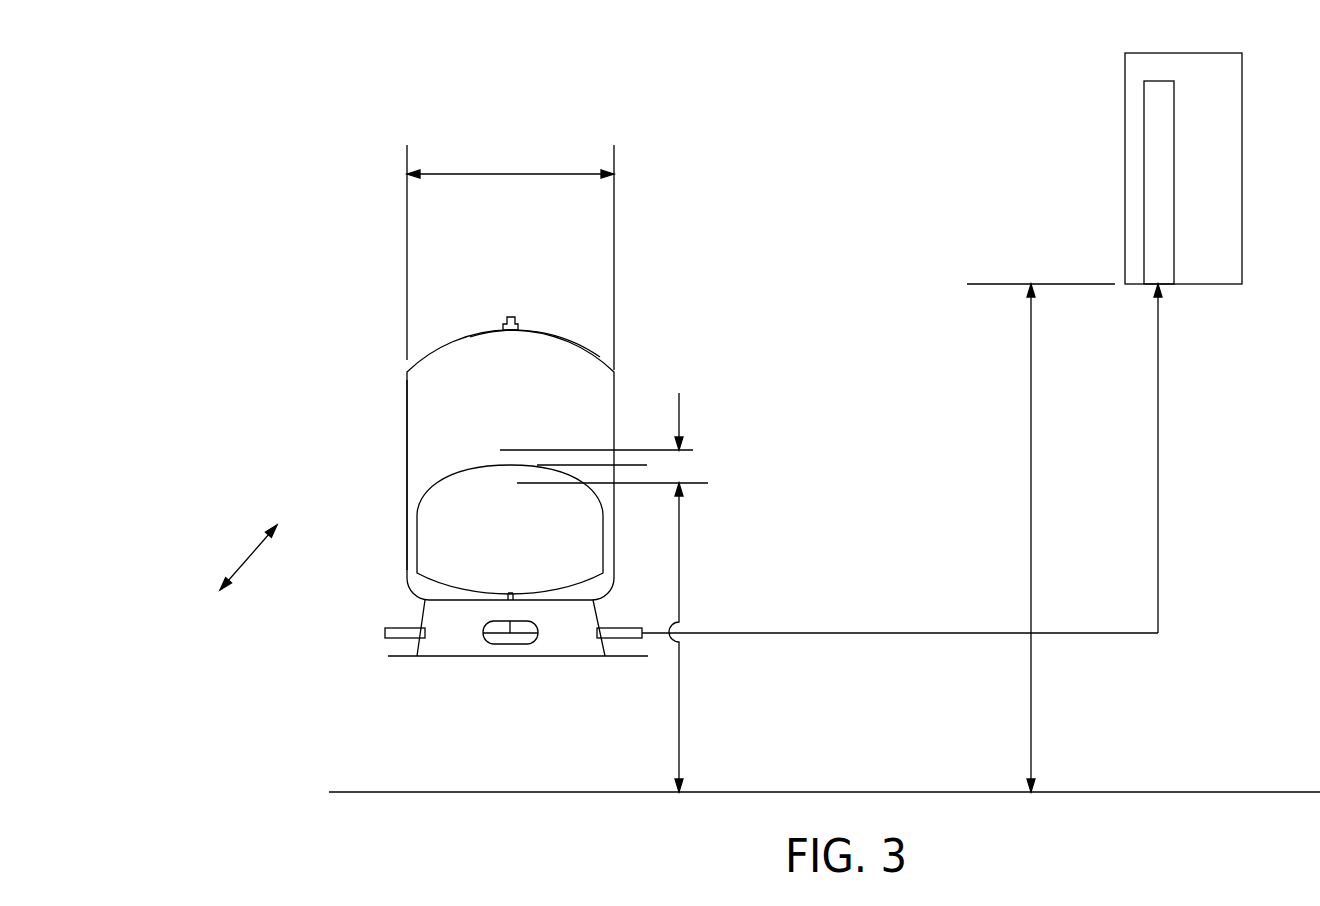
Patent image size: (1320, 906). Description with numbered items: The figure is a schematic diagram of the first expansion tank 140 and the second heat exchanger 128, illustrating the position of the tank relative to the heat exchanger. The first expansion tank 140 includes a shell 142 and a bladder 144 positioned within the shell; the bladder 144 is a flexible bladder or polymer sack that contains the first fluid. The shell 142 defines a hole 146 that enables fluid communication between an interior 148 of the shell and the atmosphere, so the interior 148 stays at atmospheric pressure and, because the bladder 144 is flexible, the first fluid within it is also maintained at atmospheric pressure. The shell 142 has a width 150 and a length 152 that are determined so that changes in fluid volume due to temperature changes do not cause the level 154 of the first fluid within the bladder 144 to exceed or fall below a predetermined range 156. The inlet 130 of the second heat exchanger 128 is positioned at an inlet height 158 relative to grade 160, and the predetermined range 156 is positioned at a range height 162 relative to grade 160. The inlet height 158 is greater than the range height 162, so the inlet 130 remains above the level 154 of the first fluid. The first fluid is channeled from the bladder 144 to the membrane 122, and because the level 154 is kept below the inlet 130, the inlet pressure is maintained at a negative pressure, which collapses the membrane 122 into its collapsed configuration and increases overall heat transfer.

The membrane 122 is at (1144, 213).
The second heat exchanger 128 is at (1125, 145).
The inlet 130 is at (1160, 288).
The first expansion tank 140 is at (444, 345).
The shell 142 is at (407, 400).
The bladder 144 is at (510, 465).
The hole 146 is at (508, 317).
The interior 148 is at (561, 353).
The width 150 is at (504, 173).
The length 152 is at (248, 553).
The level 154 is at (634, 465).
The predetermined range 156 is at (680, 466).
The inlet height 158 is at (1030, 510).
The grade 160 is at (1215, 792).
The range height 162 is at (680, 578).